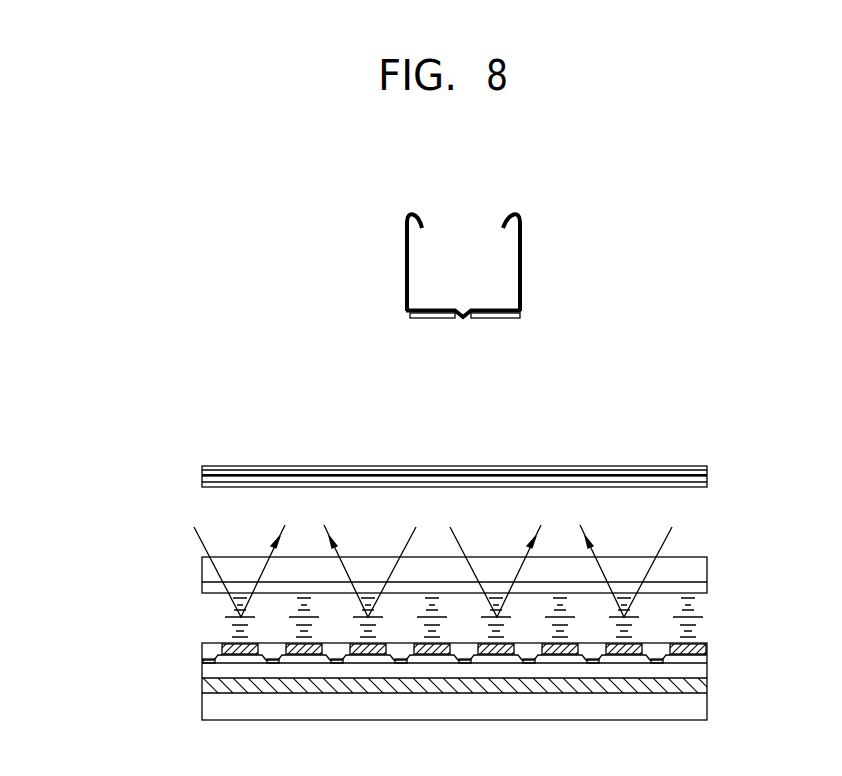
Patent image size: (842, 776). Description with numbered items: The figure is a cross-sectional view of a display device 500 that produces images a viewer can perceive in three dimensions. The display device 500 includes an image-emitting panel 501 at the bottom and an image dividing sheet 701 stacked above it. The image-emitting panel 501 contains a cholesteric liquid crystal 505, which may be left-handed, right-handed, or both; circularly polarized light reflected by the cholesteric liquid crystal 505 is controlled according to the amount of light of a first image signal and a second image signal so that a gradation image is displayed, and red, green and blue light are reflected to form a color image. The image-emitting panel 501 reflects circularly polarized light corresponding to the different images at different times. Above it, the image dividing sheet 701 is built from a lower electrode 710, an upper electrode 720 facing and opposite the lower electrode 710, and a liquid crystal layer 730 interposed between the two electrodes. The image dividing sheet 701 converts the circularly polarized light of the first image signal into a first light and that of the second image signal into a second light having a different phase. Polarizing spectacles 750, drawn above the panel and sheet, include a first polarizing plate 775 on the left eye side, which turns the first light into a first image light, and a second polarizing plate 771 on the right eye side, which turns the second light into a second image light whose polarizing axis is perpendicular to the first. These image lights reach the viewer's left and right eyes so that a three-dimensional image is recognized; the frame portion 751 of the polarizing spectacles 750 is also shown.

The display device 500 is at (78, 458).
The image-emitting panel 501 is at (132, 570).
The cholesteric liquid crystal 505 is at (197, 595).
The image dividing sheet 701 is at (132, 435).
The lower electrode 710 is at (233, 487).
The upper electrode 720 is at (233, 466).
The liquid crystal layer 730 is at (202, 475).
The polarizing spectacles 750 is at (332, 278).
The side wall 751 is at (403, 288).
The second polarizing plate 771 is at (418, 318).
The first polarizing plate 775 is at (487, 318).